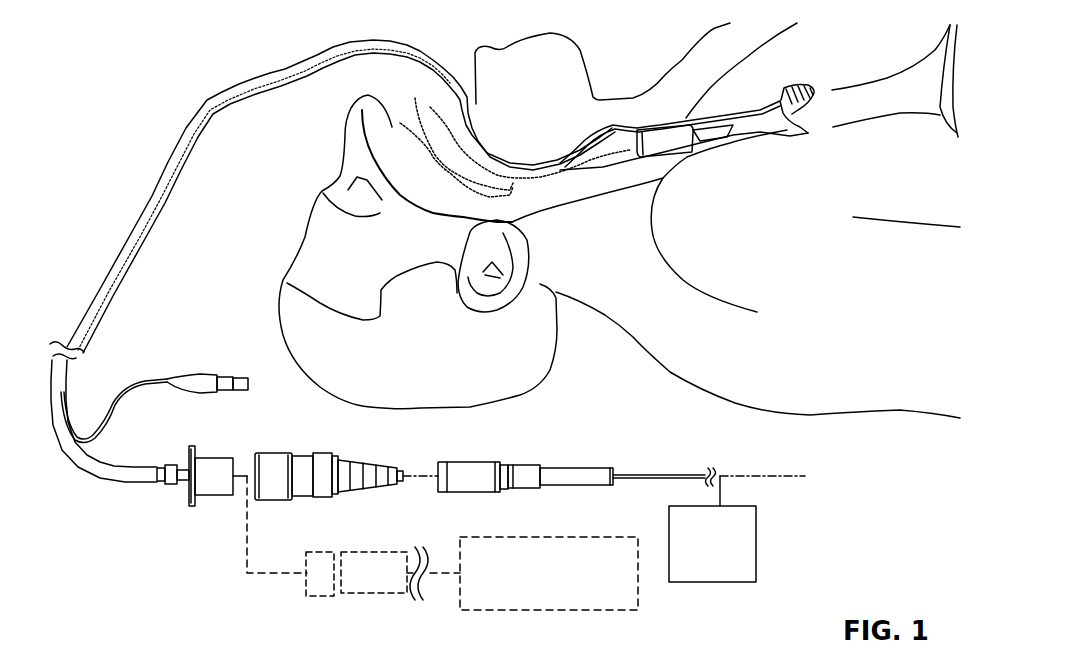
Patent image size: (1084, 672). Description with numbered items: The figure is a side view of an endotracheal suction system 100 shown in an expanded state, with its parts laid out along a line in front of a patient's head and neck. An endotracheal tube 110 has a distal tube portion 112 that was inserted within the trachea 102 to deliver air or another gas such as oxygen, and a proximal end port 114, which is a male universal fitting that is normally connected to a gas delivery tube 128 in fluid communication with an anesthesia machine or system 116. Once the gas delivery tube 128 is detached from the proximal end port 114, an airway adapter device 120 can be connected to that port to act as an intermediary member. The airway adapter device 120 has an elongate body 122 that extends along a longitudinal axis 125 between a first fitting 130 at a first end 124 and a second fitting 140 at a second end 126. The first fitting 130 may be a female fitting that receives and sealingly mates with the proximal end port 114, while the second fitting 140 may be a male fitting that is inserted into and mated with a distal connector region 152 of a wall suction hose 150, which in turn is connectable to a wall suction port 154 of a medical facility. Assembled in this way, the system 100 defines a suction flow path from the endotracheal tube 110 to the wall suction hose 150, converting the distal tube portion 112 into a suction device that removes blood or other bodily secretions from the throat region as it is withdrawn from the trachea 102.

The system 100 is at (601, 364).
The trachea 102 is at (657, 120).
The endotracheal tube 110 is at (92, 493).
The distal tube portion 112 is at (723, 118).
The proximal end port 114 is at (215, 463).
The anesthesia machine or system 116 is at (534, 573).
The airway adapter device 120 is at (350, 480).
The elongate body 122 is at (303, 458).
The first end 124 is at (250, 498).
The longitudinal axis 125 is at (758, 474).
The second end 126 is at (404, 478).
The gas delivery tube 128 is at (382, 585).
The first fitting 130 is at (283, 492).
The second fitting 140 is at (368, 470).
The wall suction hose 150 is at (530, 452).
The distal connector region 152 is at (473, 472).
The wall suction port 154 is at (690, 556).